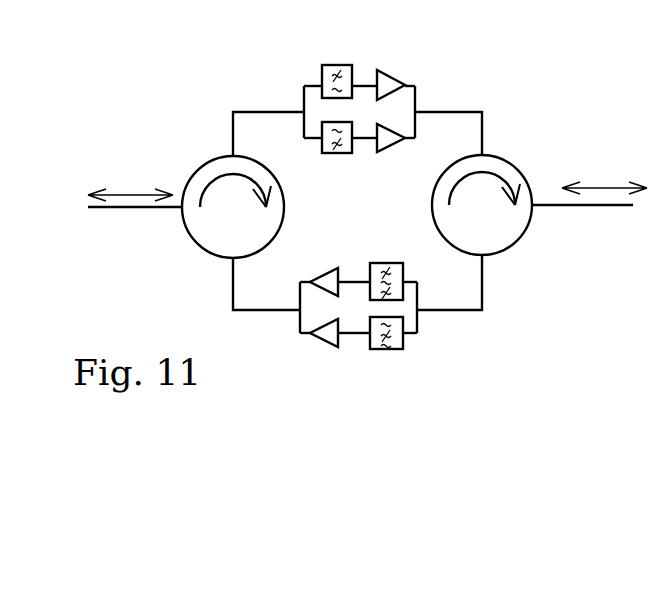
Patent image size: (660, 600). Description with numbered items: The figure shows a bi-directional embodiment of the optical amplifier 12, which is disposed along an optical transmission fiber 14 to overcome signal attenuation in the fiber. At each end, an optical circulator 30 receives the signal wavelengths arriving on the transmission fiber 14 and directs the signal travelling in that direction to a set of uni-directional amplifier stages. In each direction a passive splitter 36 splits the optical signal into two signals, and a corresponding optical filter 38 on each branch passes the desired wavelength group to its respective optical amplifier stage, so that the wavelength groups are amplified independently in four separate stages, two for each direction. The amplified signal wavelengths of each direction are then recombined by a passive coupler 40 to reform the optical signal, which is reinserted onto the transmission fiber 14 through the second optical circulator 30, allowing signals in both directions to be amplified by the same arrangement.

The optical circulator 30 is at (208, 160).
The optical transmission fiber 14 is at (142, 208).
The passive splitter 36 is at (300, 110).
The passive coupler 40 is at (417, 108).
The optical filter 38 is at (360, 206).
The optical amplifier 12 is at (452, 240).